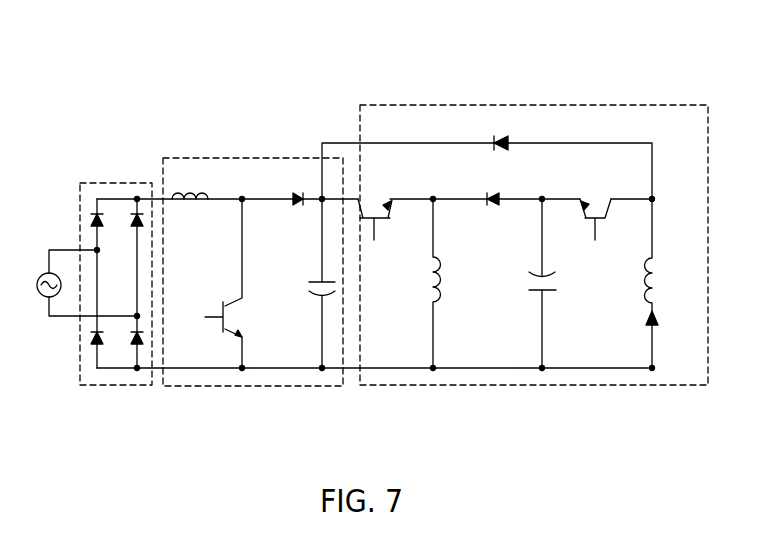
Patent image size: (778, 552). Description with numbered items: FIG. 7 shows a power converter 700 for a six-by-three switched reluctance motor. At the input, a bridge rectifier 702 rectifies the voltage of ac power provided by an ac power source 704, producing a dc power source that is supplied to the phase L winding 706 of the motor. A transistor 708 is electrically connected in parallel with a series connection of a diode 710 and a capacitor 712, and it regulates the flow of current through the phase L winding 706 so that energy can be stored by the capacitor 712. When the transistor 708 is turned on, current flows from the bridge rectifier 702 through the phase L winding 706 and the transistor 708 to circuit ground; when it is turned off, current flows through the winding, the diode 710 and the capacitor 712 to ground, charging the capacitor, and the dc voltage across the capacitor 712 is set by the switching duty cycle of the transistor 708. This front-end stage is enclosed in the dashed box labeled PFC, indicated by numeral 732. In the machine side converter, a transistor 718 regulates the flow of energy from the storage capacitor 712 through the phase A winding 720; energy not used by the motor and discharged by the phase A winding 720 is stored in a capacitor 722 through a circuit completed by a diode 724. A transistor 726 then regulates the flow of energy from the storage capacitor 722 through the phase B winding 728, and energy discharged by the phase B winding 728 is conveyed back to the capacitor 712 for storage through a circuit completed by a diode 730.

The power converter 700 is at (428, 80).
The bridge rectifier 702 is at (118, 182).
The ac power source 704 is at (45, 298).
The phase L winding 706 is at (200, 207).
The transistor 708 is at (232, 300).
The diode 710 is at (292, 206).
The capacitor 712 is at (317, 281).
The transistor 718 is at (389, 226).
The phase A winding 720 is at (432, 281).
The capacitor 722 is at (539, 293).
The diode 724 is at (488, 206).
The transistor 726 is at (611, 210).
The phase B winding 728 is at (646, 284).
The diode 730 is at (501, 151).
The power factor correction circuit PFC 732 is at (294, 388).